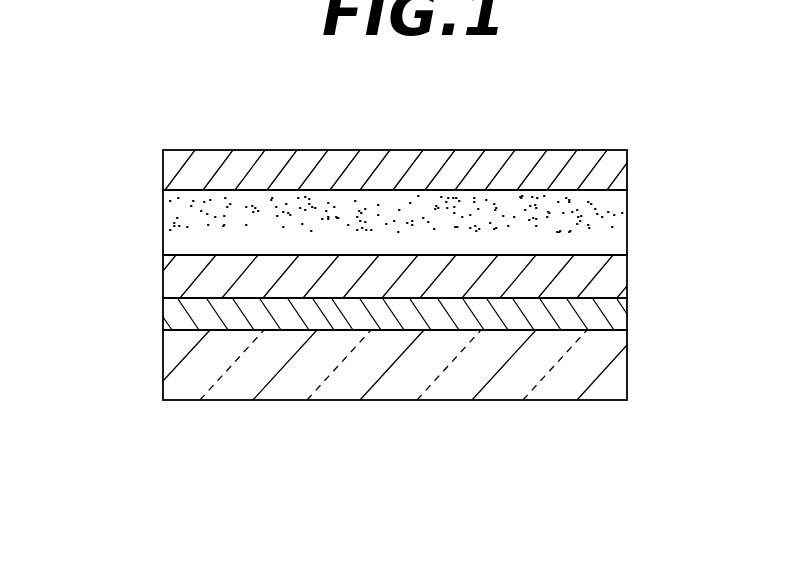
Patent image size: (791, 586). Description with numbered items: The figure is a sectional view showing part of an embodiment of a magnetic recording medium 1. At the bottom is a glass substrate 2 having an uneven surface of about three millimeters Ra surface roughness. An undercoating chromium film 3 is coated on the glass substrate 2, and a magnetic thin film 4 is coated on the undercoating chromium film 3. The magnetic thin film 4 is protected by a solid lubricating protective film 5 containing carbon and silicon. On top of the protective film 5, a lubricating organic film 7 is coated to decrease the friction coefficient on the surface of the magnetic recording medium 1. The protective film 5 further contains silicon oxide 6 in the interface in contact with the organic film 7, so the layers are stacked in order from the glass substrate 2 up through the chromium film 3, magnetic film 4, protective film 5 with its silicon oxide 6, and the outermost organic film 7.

The magnetic recording medium 1 is at (142, 269).
The glass substrate 2 is at (628, 363).
The undercoating chromium film 3 is at (628, 316).
The magnetic thin film 4 is at (628, 273).
The protective film 5 is at (628, 237).
The silicon oxide 6 is at (608, 204).
The lubricating organic film 7 is at (628, 172).